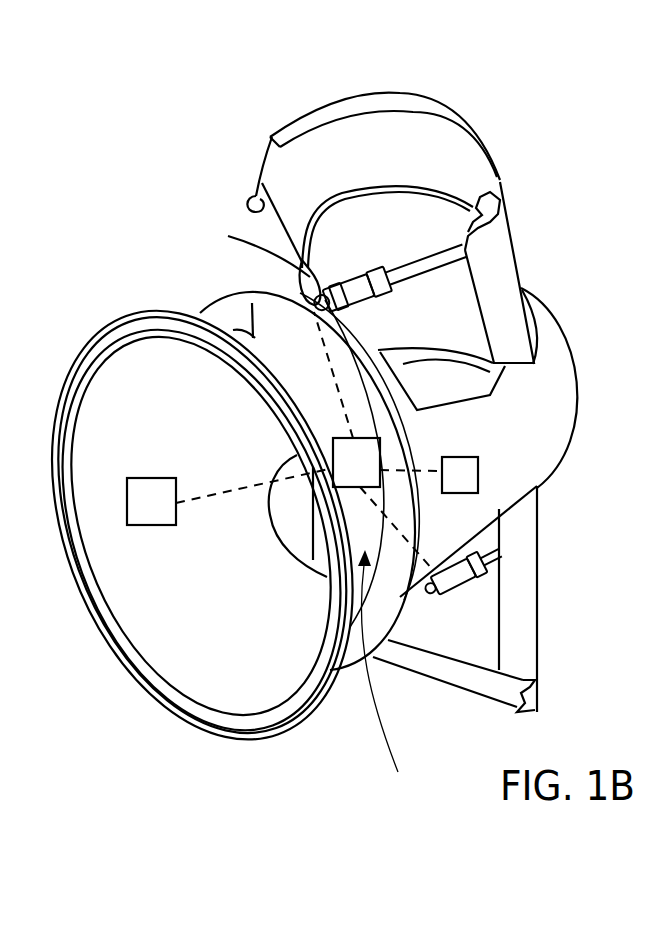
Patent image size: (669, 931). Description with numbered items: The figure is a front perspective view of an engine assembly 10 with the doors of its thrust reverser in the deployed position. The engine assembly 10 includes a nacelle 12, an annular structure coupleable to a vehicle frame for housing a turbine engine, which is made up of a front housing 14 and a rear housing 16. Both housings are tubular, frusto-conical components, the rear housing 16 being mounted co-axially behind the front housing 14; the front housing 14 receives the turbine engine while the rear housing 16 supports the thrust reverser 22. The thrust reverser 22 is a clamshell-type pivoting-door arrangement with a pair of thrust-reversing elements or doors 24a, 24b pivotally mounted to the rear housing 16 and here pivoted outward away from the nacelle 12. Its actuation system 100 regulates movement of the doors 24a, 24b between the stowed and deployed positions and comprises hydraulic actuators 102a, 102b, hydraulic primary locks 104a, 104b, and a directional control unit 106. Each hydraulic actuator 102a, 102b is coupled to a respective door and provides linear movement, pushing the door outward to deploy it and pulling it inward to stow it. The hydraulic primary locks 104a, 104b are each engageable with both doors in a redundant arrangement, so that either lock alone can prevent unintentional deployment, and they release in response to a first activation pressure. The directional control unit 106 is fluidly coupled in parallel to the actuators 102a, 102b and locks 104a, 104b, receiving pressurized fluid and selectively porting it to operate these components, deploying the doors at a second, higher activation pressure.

The engine assembly 10 is at (144, 157).
The nacelle 12 is at (155, 715).
The front housing 14 is at (250, 303).
The rear housing 16 is at (562, 362).
The thrust reverser 22 is at (545, 226).
The thrust-reversing element 24a is at (449, 118).
The thrust-reversing element 24b is at (540, 652).
The actuation system 100 is at (385, 677).
The hydraulic actuator 102a is at (300, 266).
The hydraulic actuator 102b is at (472, 575).
The hydraulic primary lock 104a is at (128, 508).
The hydraulic primary lock 104b is at (480, 476).
The directional control unit 106 is at (382, 437).